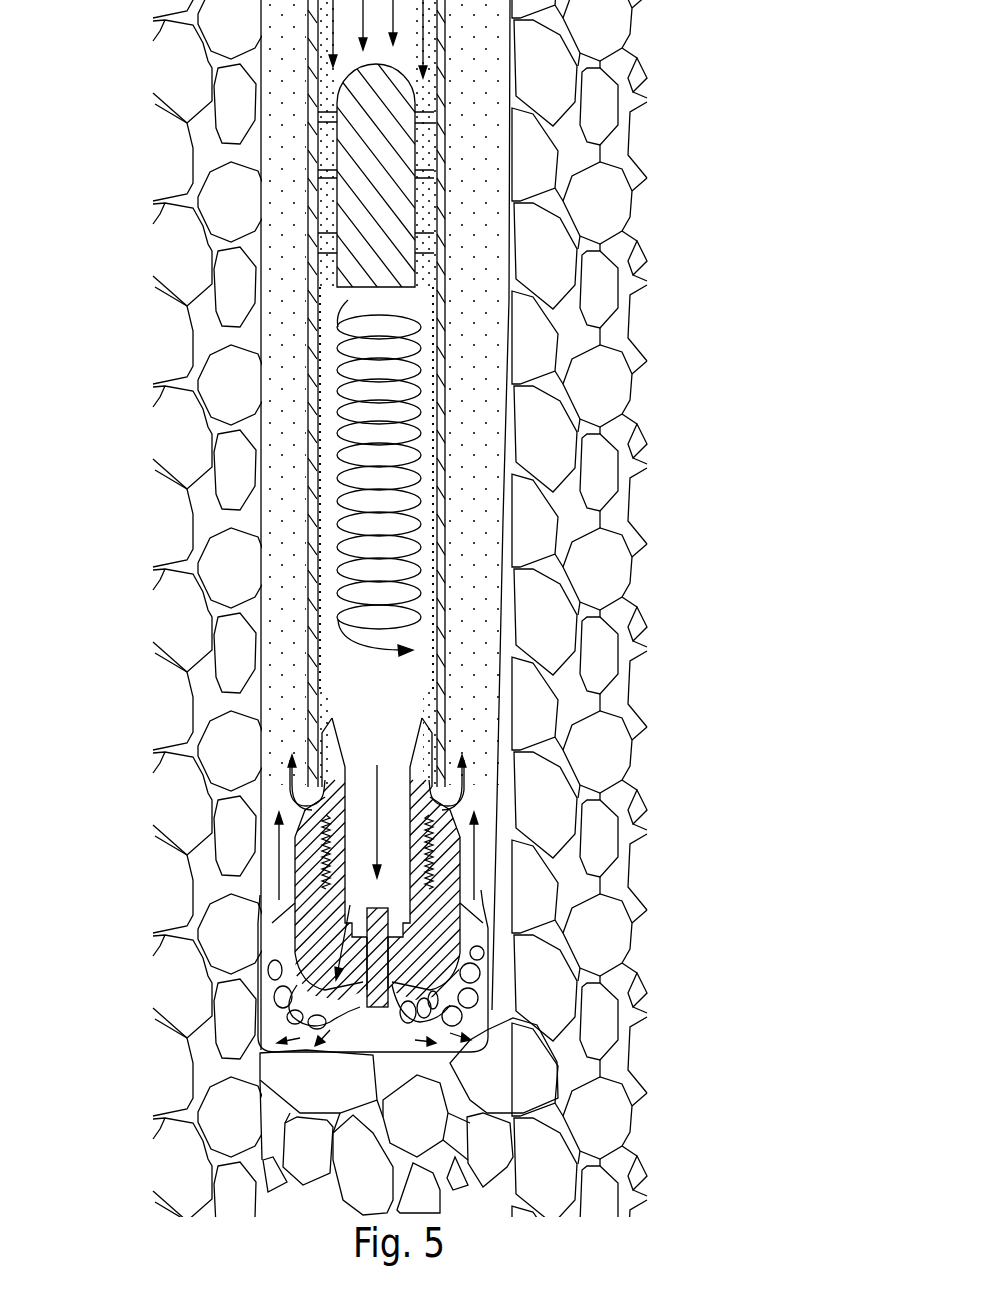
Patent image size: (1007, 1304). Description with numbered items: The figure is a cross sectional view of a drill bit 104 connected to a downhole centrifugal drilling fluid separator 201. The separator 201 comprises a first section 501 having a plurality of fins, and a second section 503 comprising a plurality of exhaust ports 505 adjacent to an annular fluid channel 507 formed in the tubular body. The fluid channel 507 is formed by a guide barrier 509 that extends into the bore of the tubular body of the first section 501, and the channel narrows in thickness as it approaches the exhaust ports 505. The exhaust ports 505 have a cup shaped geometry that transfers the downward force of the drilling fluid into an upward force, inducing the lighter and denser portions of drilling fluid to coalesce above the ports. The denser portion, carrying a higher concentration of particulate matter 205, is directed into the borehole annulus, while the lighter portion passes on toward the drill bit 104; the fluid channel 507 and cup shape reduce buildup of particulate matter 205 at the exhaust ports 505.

The drill bit 104 is at (490, 927).
The downhole centrifugal drilling fluid separator 201 is at (474, 290).
The particulate matter 205 is at (290, 722).
The first section 501 is at (453, 157).
The inner liner 503 is at (450, 679).
The exhaust ports 505 is at (453, 795).
The annular fluid channel 507 is at (423, 717).
The guide barrier 509 is at (424, 747).